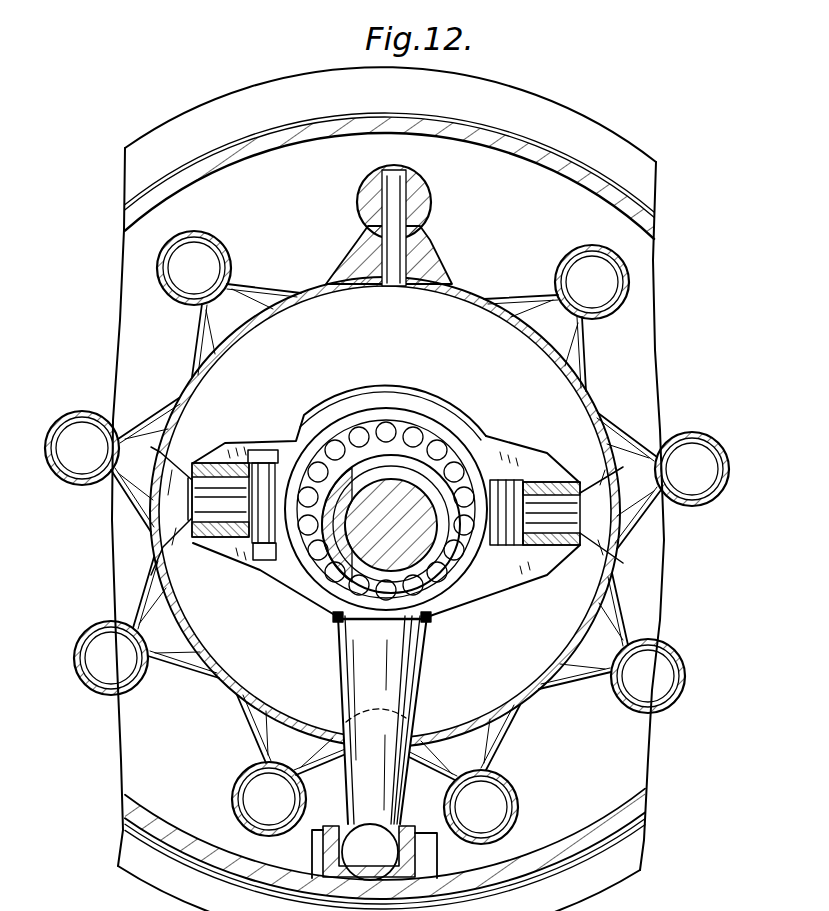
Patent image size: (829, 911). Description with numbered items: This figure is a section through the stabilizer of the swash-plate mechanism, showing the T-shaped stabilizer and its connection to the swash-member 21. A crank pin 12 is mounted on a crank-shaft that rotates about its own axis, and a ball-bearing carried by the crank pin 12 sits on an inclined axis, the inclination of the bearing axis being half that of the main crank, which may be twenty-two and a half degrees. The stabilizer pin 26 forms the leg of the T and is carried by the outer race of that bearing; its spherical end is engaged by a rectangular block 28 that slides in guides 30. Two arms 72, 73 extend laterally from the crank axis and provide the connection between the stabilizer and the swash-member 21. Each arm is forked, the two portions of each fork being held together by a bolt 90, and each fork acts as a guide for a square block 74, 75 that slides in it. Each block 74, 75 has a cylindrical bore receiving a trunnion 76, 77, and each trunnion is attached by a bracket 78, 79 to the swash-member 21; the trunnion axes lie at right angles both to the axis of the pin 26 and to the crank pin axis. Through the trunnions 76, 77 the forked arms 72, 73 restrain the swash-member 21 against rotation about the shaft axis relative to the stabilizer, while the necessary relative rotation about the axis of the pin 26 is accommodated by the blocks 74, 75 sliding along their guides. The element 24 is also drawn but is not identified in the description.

The crank pin 12 is at (356, 600).
The swash-member 21 is at (220, 686).
The rim pad roller 24 is at (434, 201).
The stabilizer pin 26 is at (410, 674).
The rectangular block 28 is at (323, 840).
The guides 30 is at (424, 850).
The arm 72 is at (238, 447).
The arm 73 is at (507, 470).
The square block 74 is at (247, 540).
The square block 75 is at (573, 530).
The trunnion 76 is at (200, 540).
The trunnion 77 is at (557, 548).
The bracket 78 is at (256, 452).
The bracket 79 is at (568, 465).
The bolt 90 is at (312, 576).